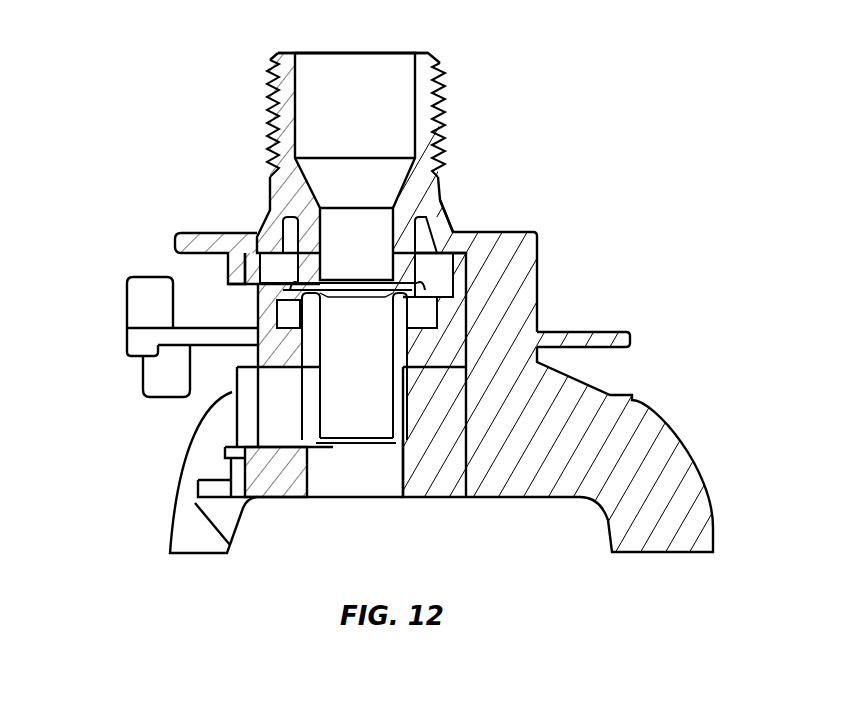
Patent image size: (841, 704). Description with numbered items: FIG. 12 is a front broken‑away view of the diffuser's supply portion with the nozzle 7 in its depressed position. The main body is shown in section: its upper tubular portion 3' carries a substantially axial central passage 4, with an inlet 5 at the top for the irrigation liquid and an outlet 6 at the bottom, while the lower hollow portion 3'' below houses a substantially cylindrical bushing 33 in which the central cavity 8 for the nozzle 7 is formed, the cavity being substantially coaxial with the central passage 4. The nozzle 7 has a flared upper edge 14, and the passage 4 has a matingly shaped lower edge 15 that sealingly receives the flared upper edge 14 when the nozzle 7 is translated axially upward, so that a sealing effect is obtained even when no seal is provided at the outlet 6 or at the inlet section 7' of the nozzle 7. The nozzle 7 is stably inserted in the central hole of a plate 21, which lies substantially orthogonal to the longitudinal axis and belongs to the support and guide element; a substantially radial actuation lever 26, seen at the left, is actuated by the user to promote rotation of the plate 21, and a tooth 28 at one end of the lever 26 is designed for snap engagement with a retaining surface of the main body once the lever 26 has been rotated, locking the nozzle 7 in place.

The inlet 5 is at (300, 52).
The upper tubular portion 3' is at (298, 118).
The central passage 4 is at (392, 100).
The outlet 6 is at (415, 212).
The lower edge 15 is at (302, 272).
The flared upper edge 14 is at (440, 262).
The inlet section 7' is at (490, 328).
The actuation lever 26 is at (133, 334).
The plate 21 is at (545, 355).
The tooth 28 is at (130, 358).
The lower hollow portion 3'' is at (251, 439).
The nozzle 7 is at (337, 428).
The central cavity 8 is at (382, 467).
The bushing 33 is at (440, 477).